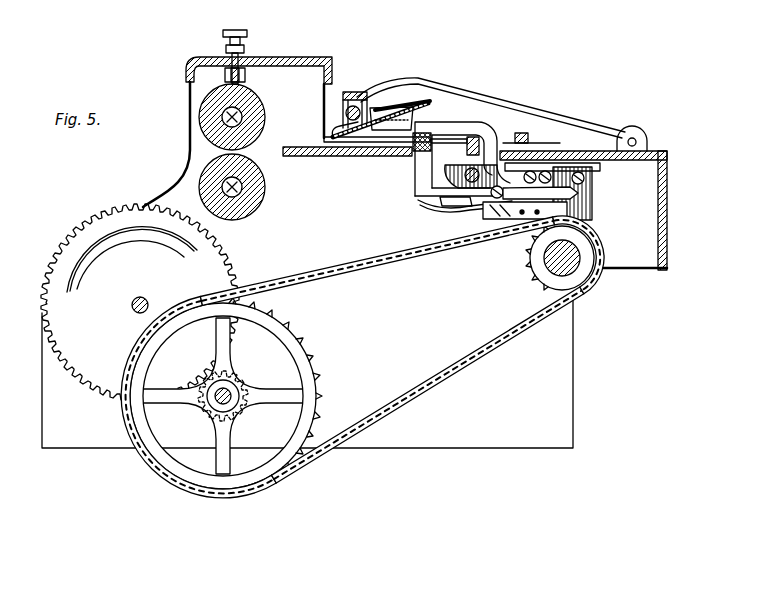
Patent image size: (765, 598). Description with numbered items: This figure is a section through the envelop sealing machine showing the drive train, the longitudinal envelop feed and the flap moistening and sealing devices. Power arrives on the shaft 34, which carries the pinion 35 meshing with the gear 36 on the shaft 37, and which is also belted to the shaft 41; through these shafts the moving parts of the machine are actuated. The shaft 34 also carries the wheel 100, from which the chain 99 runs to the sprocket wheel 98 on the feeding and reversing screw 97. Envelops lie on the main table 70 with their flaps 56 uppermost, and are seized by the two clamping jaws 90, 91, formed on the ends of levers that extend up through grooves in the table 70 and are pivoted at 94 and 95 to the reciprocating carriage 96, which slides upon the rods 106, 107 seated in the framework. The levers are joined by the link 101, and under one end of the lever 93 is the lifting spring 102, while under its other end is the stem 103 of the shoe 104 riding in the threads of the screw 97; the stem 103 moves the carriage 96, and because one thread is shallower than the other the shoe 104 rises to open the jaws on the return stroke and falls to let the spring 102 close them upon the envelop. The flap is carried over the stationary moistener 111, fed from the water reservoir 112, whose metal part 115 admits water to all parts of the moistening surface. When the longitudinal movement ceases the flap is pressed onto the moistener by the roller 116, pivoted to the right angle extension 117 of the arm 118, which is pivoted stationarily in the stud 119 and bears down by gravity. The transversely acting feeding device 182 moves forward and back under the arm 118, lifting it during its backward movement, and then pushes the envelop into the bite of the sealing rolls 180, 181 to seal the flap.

The shaft 34 is at (217, 404).
The pinion 35 is at (246, 380).
The gear 36 is at (75, 227).
The shaft 37 is at (132, 304).
The shaft 41 is at (199, 186).
The flaps 56 is at (327, 132).
The main table 70 is at (361, 157).
The clamping jaw 90 is at (427, 132).
The clamping jaw 91 is at (418, 149).
The lever 93 is at (421, 203).
The pivot 94 is at (549, 171).
The pivot 95 is at (493, 197).
The reciprocating carriage 96 is at (594, 190).
The feeding and reversing screw 97 is at (548, 263).
The sprocket wheel 98 is at (552, 280).
The chain 99 is at (455, 400).
The wheel 100 is at (324, 410).
The link 101 is at (507, 205).
The lifting spring 102 is at (444, 207).
The stem 103 is at (572, 207).
The shoe 104 is at (592, 233).
The rod 106 is at (465, 180).
The rod 107 is at (586, 178).
The moistener 111 is at (376, 118).
The water reservoir 112 is at (408, 117).
The metal part of the moistener 115 is at (398, 111).
The roller 116 is at (340, 141).
The right angle extension 117 is at (358, 94).
The arm 118 is at (475, 98).
The stud 119 is at (647, 146).
The sealing roll 180 is at (258, 107).
The sealing roll 181 is at (263, 187).
The transversely acting feeding device 182 is at (521, 133).